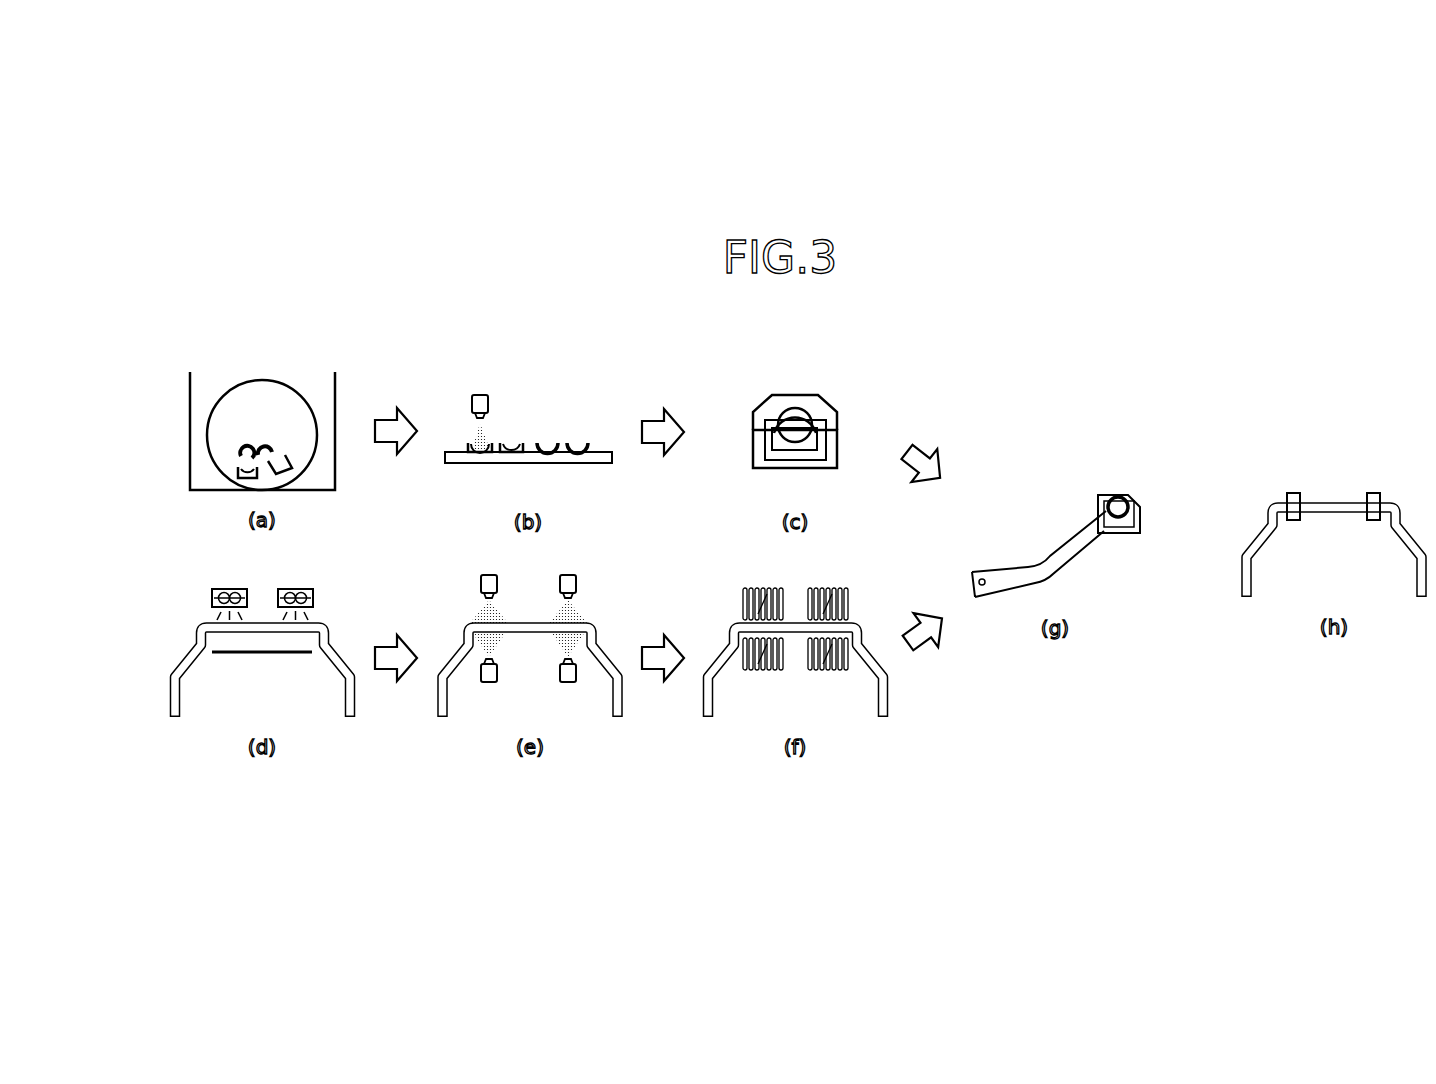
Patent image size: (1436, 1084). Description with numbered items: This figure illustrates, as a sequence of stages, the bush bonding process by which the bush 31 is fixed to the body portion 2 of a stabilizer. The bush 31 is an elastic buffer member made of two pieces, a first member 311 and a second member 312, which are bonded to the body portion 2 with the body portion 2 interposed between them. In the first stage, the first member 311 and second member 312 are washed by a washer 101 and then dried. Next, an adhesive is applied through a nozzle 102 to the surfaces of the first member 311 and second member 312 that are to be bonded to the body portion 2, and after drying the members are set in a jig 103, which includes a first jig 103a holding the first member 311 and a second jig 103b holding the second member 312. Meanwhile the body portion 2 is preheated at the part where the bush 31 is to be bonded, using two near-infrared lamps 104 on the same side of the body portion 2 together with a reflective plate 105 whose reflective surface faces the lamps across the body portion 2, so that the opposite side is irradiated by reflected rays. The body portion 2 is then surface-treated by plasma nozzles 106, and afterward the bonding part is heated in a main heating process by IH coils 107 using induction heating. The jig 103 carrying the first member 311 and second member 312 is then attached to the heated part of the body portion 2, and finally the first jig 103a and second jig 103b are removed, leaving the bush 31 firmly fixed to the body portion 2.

The body portion 2 is at (188, 660).
The bush 31 is at (1290, 482).
The washer 101 is at (335, 396).
The nozzle 102 is at (489, 402).
The jig 103 is at (930, 373).
The first jig 103a is at (838, 418).
The second jig 103b is at (838, 447).
The near-infrared lamp 104 is at (213, 598).
The reflective plate 105 is at (228, 654).
The plasma nozzle 106 is at (500, 583).
The IH coil 107 is at (850, 604).
The first member 311 is at (262, 440).
The second member 312 is at (288, 461).